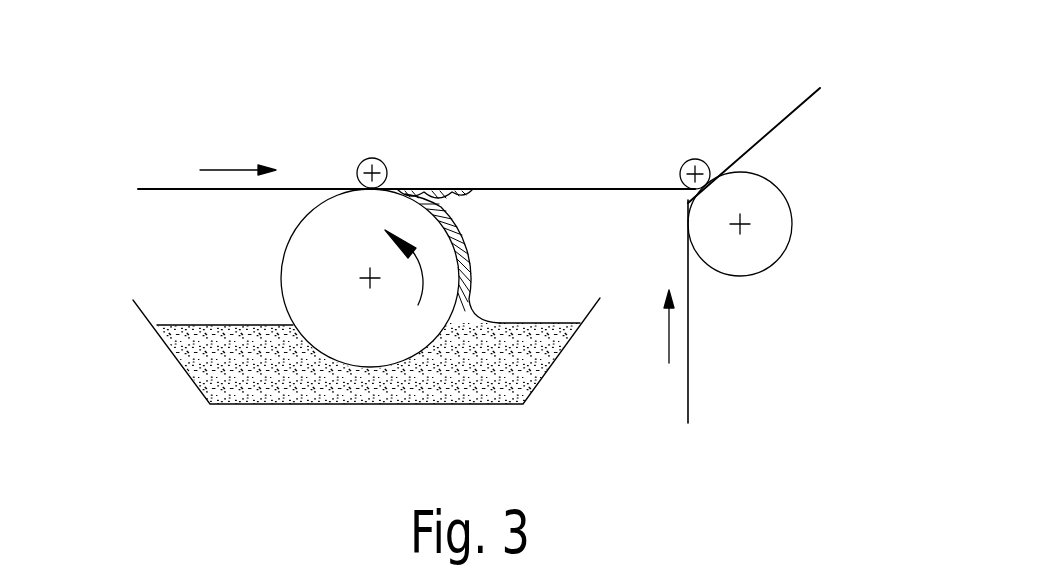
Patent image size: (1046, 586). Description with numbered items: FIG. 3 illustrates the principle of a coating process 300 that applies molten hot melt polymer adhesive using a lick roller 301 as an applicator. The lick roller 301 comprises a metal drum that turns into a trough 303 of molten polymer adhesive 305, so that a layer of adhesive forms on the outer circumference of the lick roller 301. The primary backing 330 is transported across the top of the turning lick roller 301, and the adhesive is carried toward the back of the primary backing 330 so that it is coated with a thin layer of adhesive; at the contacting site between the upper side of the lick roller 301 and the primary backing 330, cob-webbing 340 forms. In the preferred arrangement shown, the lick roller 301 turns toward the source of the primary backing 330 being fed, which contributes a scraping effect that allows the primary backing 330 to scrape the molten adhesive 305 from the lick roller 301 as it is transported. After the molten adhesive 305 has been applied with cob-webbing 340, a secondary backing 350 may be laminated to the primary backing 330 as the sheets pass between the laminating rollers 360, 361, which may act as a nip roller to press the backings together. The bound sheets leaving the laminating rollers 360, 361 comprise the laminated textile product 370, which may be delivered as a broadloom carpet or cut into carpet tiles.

The coating system 300 is at (150, 57).
The lick roller 301 is at (303, 263).
The trough 303 is at (192, 360).
The molten polymer adhesive 305 is at (363, 383).
The primary backing 330 is at (168, 189).
The cob-webbing 340 is at (470, 190).
The secondary backing 350 is at (688, 385).
The laminating roller 360 is at (783, 232).
The laminating roller 361 is at (688, 160).
The laminated textile product 370 is at (805, 103).